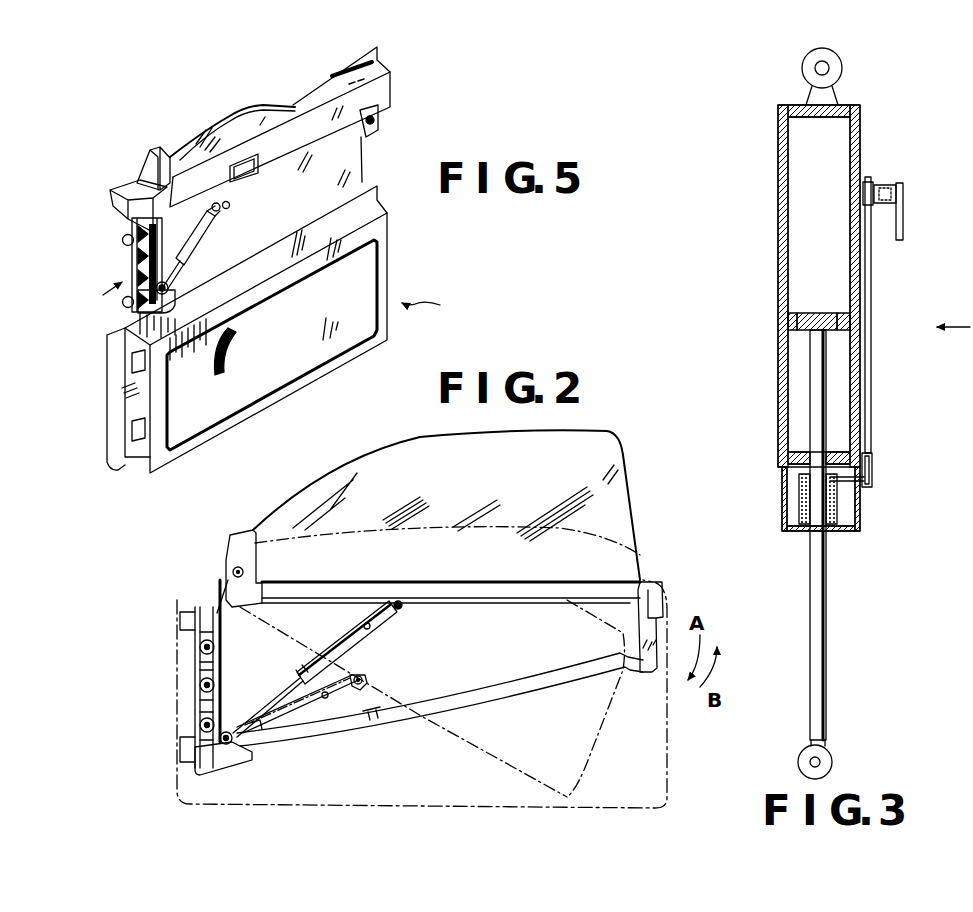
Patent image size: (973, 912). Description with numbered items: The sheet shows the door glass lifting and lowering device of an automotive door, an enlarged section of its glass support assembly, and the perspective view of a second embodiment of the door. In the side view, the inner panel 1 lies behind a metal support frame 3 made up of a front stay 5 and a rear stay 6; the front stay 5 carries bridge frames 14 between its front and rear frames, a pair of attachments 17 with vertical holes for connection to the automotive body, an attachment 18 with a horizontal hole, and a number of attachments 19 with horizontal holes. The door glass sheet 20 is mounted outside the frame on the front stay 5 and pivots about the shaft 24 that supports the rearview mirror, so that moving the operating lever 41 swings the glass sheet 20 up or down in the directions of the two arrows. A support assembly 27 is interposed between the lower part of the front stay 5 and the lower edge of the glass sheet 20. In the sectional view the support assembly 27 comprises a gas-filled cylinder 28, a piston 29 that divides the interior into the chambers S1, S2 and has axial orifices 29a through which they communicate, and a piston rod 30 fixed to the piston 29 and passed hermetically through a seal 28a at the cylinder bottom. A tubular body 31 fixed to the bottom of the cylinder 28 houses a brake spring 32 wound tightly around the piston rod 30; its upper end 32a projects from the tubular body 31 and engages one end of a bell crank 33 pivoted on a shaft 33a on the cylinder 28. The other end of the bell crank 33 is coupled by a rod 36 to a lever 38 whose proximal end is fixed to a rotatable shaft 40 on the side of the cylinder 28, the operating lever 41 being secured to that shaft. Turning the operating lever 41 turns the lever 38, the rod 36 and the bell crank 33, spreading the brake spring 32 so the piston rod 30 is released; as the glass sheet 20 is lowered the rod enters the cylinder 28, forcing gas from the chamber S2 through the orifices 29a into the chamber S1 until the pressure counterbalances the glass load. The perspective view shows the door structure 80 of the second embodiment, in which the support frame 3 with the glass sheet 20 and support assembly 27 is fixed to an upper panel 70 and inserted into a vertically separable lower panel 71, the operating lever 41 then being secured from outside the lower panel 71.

In FIG. 2, the inner panel 1 is at (669, 742).
In FIG. 5, the support frame 3 is at (103, 296).
In FIG. 5, the front stay 5 is at (128, 252).
In FIG. 2, the front stay 5 is at (188, 580).
In FIG. 5, the rear stay 6 is at (380, 120).
In FIG. 2, the rear stay 6 is at (665, 603).
In FIG. 2, the bridge frames 14 is at (197, 724).
In FIG. 2, the attachments 17 is at (180, 750).
In FIG. 2, the attachment 18 is at (233, 533).
In FIG. 2, the attachments 19 is at (195, 770).
In FIG. 5, the door glass sheet 20 is at (203, 130).
In FIG. 2, the door glass sheet 20 is at (623, 523).
In FIG. 2, the shaft 24 is at (245, 570).
In FIG. 5, the support assembly 27 is at (200, 232).
In FIG. 3, the support assembly 27 is at (773, 92).
In FIG. 2, the support assembly 27 is at (355, 647).
In FIG. 3, the cylinder 28 is at (778, 248).
In FIG. 2, the cylinder 28 is at (385, 622).
In FIG. 3, the seal 28a is at (795, 455).
In FIG. 3, the piston 29 is at (822, 313).
In FIG. 3, the axial orifices 29a is at (845, 312).
In FIG. 3, the piston rod 30 is at (828, 400).
In FIG. 2, the piston rod 30 is at (277, 691).
In FIG. 3, the tubular body 31 is at (783, 525).
In FIG. 3, the brake spring 32 is at (848, 520).
In FIG. 3, the upper end of brake spring 32a is at (865, 485).
In FIG. 3, the bell crank 33 is at (875, 470).
In FIG. 3, the shaft 33a is at (873, 458).
In FIG. 3, the rod 36 is at (872, 364).
In FIG. 3, the lever 38 is at (885, 185).
In FIG. 3, the rotatable shaft 40 is at (870, 182).
In FIG. 3, the operating lever 41 is at (904, 222).
In FIG. 5, the upper panel 70 is at (383, 77).
In FIG. 5, the lower panel 71 is at (388, 262).
In FIG. 5, the automotive door structure 80 is at (436, 305).
In FIG. 3, the chamber S1 is at (803, 405).
In FIG. 3, the chamber S2 is at (812, 195).